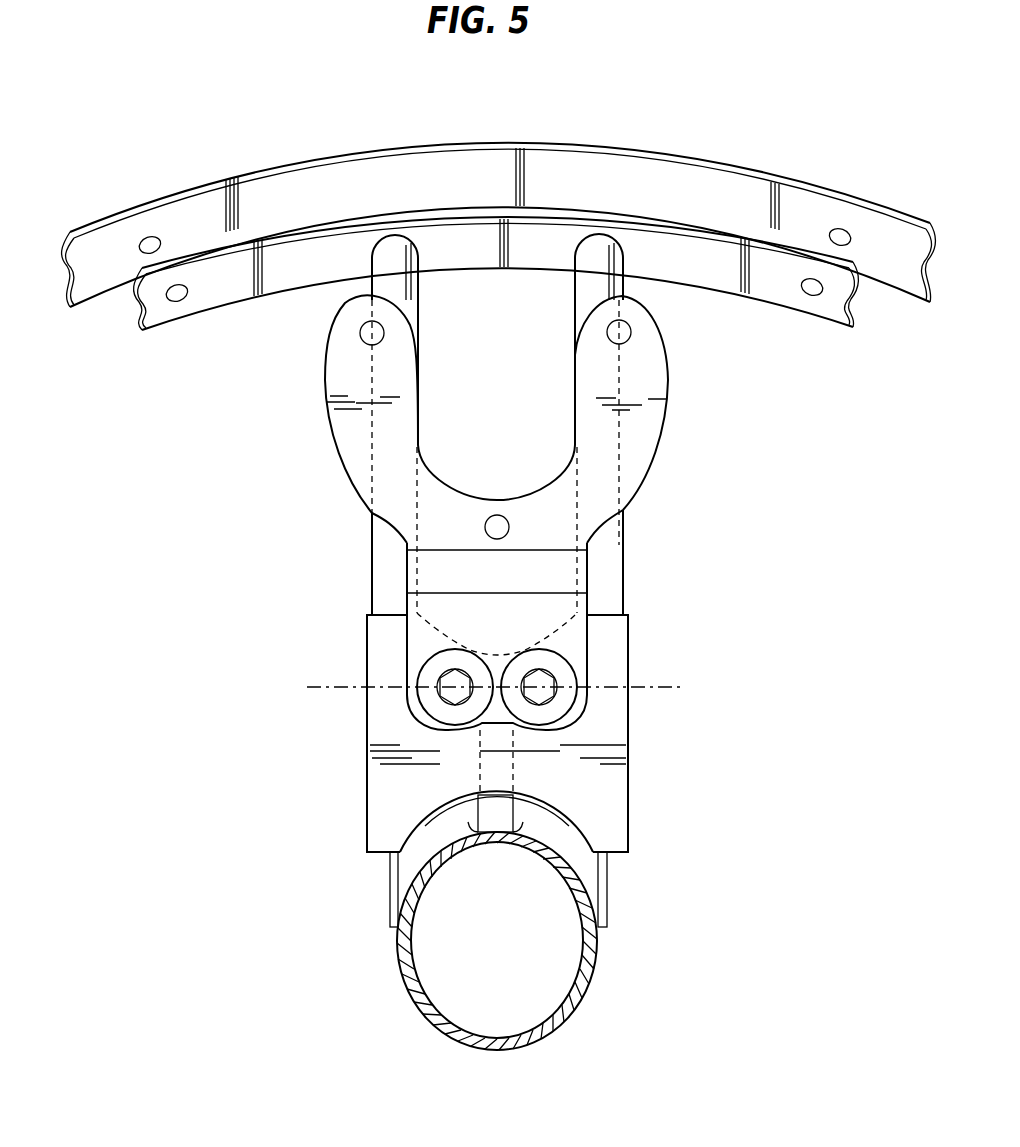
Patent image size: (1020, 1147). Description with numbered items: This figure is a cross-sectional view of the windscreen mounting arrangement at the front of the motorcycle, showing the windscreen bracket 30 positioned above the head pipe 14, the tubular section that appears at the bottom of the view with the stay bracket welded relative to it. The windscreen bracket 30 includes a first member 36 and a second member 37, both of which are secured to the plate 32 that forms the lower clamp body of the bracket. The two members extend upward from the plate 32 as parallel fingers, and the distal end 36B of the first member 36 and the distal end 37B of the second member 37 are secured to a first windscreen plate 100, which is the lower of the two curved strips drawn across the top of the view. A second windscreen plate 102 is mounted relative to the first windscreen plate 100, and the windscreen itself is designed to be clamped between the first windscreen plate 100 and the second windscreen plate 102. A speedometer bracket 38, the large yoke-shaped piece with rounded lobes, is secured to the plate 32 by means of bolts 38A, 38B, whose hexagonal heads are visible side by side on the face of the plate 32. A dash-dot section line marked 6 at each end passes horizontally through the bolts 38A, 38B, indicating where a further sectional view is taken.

The head pipe 14 is at (590, 966).
The windscreen bracket 30 is at (294, 524).
The plate 32 is at (612, 796).
The first member 36 is at (628, 290).
The distal end of first member 36B is at (597, 235).
The second member 37 is at (385, 290).
The distal end of second member 37B is at (398, 235).
The speedometer bracket 38 is at (650, 377).
The bolt 38A is at (540, 672).
The bolt 38B is at (452, 695).
The first windscreen plate 100 is at (707, 272).
The second windscreen plate 102 is at (715, 185).
The section line 6- 6 is at (497, 688).